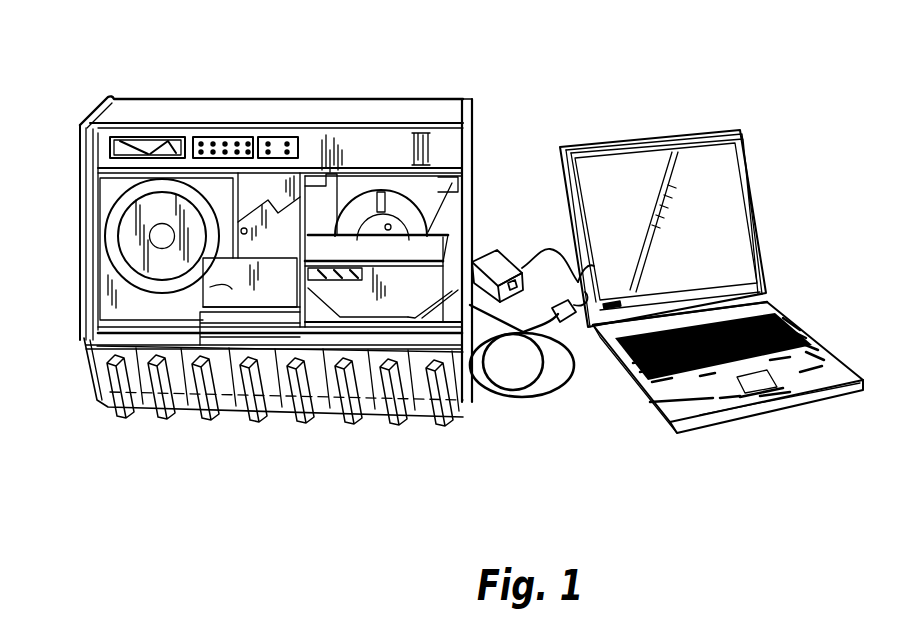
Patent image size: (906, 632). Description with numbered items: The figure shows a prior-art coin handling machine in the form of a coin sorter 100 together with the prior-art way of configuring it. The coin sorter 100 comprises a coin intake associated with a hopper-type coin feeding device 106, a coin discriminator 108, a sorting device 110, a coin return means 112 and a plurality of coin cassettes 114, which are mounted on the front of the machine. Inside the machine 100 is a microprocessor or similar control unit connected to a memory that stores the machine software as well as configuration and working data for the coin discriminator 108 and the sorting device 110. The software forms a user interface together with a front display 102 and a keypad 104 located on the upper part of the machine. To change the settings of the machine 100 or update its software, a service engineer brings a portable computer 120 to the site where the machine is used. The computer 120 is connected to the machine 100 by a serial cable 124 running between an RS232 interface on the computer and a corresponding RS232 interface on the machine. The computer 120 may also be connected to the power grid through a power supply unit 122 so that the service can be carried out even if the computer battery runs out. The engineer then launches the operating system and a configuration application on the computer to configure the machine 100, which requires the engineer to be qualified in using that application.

The coin sorter 100 is at (92, 101).
The front display 102 is at (160, 146).
The keypad 104 is at (236, 146).
The hopper-type coin feeding device 106 is at (396, 205).
The coin discriminator 108 is at (290, 210).
The sorting device 110 is at (113, 226).
The coin return means 112 is at (205, 417).
The coin cassettes 114 is at (338, 420).
The portable computer 120 is at (643, 122).
The power supply unit 122 is at (492, 260).
The serial cable 124 is at (541, 393).